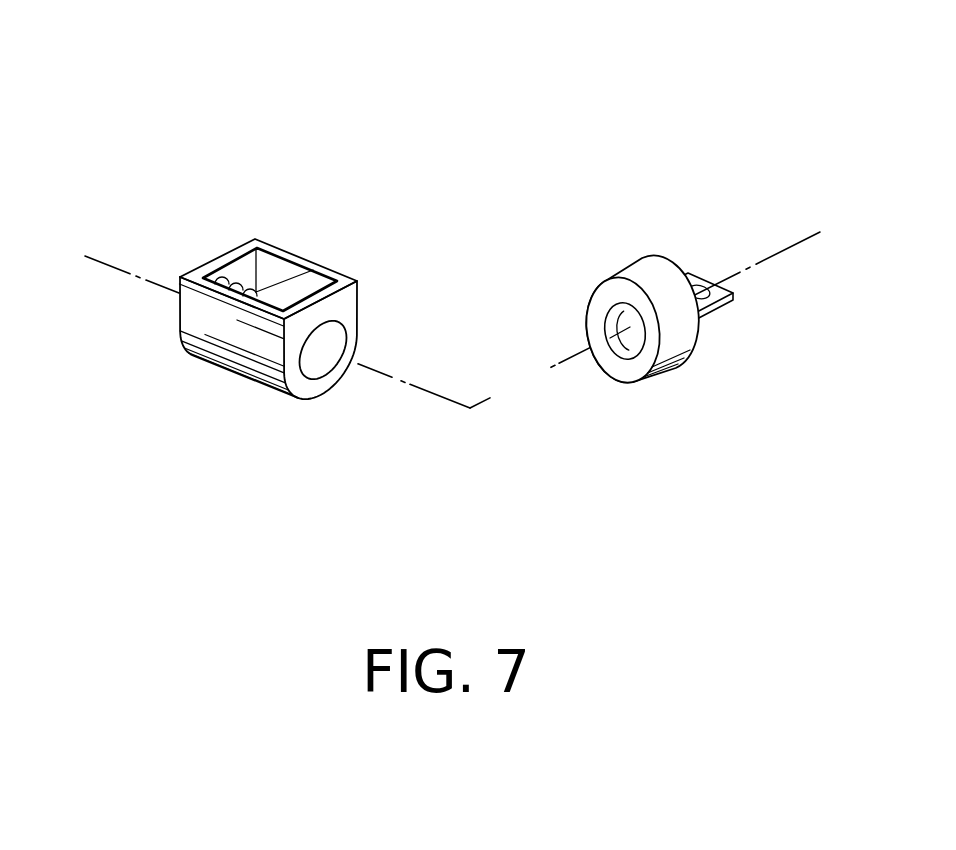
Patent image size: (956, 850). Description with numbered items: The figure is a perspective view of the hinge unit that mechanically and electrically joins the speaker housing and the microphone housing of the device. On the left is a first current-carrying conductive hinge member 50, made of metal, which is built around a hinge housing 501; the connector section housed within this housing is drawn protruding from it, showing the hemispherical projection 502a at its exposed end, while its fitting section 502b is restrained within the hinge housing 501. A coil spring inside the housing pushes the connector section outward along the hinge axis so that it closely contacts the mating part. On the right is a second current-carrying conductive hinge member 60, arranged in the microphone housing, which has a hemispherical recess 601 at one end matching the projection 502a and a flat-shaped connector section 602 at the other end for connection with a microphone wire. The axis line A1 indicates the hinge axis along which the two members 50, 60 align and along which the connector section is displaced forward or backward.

The first current-carrying conductive hinge member 50 is at (248, 247).
The hinge housing 501 is at (226, 331).
The hemispherical projection 502a is at (322, 362).
The fitting section 502b is at (317, 281).
The second current-carrying conductive hinge member 60 is at (692, 287).
The hemispherical recess 601 is at (618, 353).
The connector section 602 is at (708, 288).
The angle between axes A1 is at (487, 402).